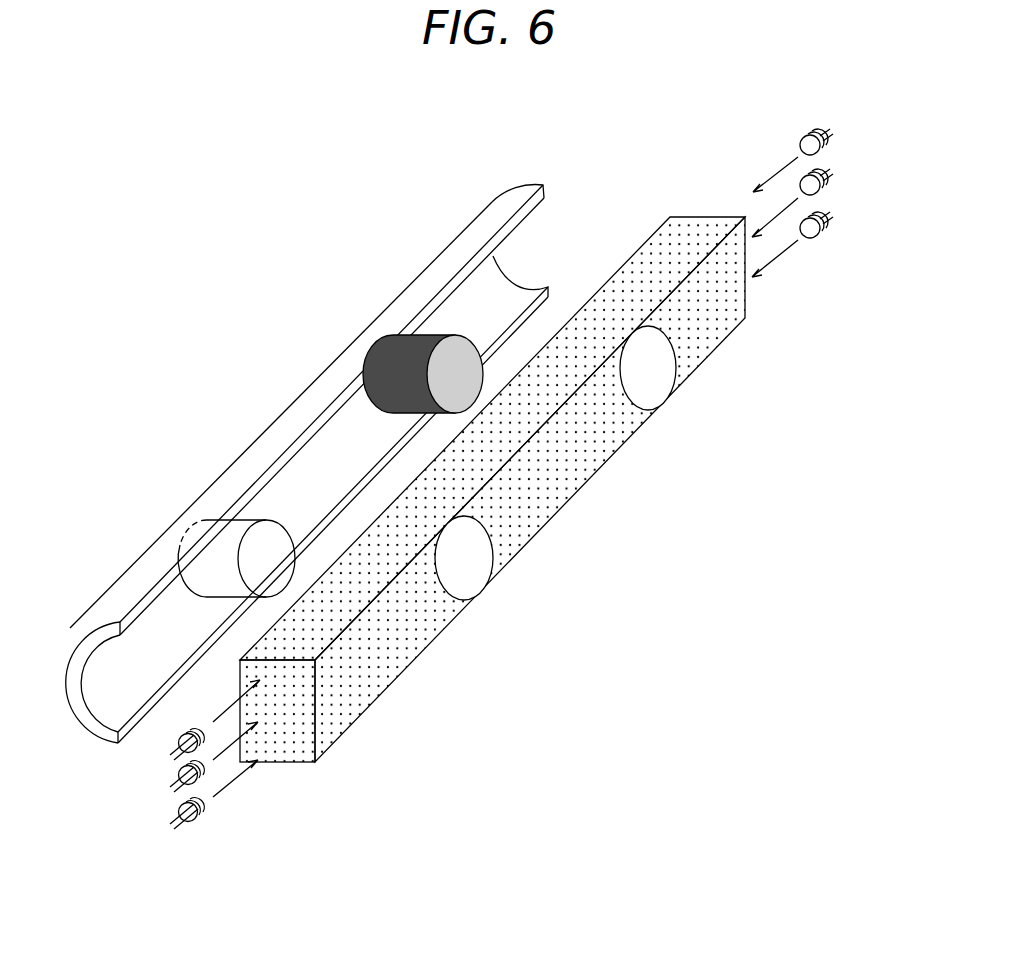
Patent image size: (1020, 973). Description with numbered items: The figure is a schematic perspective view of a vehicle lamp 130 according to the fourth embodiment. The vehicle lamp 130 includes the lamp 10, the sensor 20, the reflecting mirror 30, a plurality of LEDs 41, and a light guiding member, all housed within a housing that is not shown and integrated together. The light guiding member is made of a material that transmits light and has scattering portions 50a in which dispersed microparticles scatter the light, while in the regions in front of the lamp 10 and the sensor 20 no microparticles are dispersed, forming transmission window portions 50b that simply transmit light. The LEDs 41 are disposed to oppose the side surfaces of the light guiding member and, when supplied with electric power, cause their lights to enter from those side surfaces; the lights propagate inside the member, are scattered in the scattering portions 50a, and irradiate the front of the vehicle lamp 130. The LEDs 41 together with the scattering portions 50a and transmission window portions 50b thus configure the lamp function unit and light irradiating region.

The lamp 10 is at (213, 557).
The sensor 20 is at (408, 360).
The reflecting mirror 30 is at (503, 203).
The LEDs 41 is at (847, 120).
The scattering portions 50a is at (722, 328).
The transmission window portions 50b is at (467, 562).
The vehicle lamp 130 is at (526, 543).